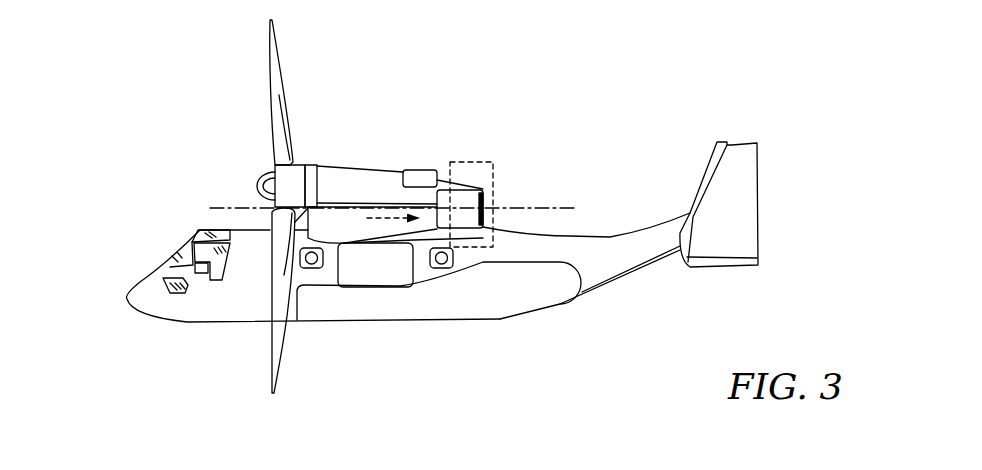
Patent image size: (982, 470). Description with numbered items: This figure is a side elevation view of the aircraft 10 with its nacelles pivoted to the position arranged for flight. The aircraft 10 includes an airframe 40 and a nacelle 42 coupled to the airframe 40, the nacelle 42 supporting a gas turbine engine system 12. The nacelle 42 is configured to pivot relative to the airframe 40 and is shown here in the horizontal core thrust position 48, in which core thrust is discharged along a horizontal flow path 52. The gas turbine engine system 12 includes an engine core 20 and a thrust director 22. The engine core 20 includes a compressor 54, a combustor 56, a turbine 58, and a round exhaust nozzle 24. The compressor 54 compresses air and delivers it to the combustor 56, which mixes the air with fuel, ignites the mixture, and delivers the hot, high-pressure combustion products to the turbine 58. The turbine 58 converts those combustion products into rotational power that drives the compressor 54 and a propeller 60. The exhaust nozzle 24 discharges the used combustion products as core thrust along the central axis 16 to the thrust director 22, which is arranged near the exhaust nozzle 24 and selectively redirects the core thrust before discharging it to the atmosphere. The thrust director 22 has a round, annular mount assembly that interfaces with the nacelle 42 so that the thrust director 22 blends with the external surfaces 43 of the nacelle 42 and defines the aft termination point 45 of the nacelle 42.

The aircraft 10 is at (626, 82).
The gas turbine engine system 12 is at (441, 87).
The central axis 16 is at (573, 207).
The engine core 20 is at (350, 234).
The thrust director 22 is at (473, 191).
The round exhaust nozzle 24 is at (445, 199).
The airframe 40 is at (558, 250).
The nacelle 42 is at (328, 170).
The external surfaces 43 is at (393, 167).
The aft termination point 45 is at (502, 201).
The horizontal core thrust position 48 is at (356, 157).
The horizontal flow path 52 is at (383, 219).
The compressor 54 is at (343, 187).
The combustor 56 is at (373, 191).
The turbine 58 is at (417, 198).
The propeller 60 is at (262, 153).